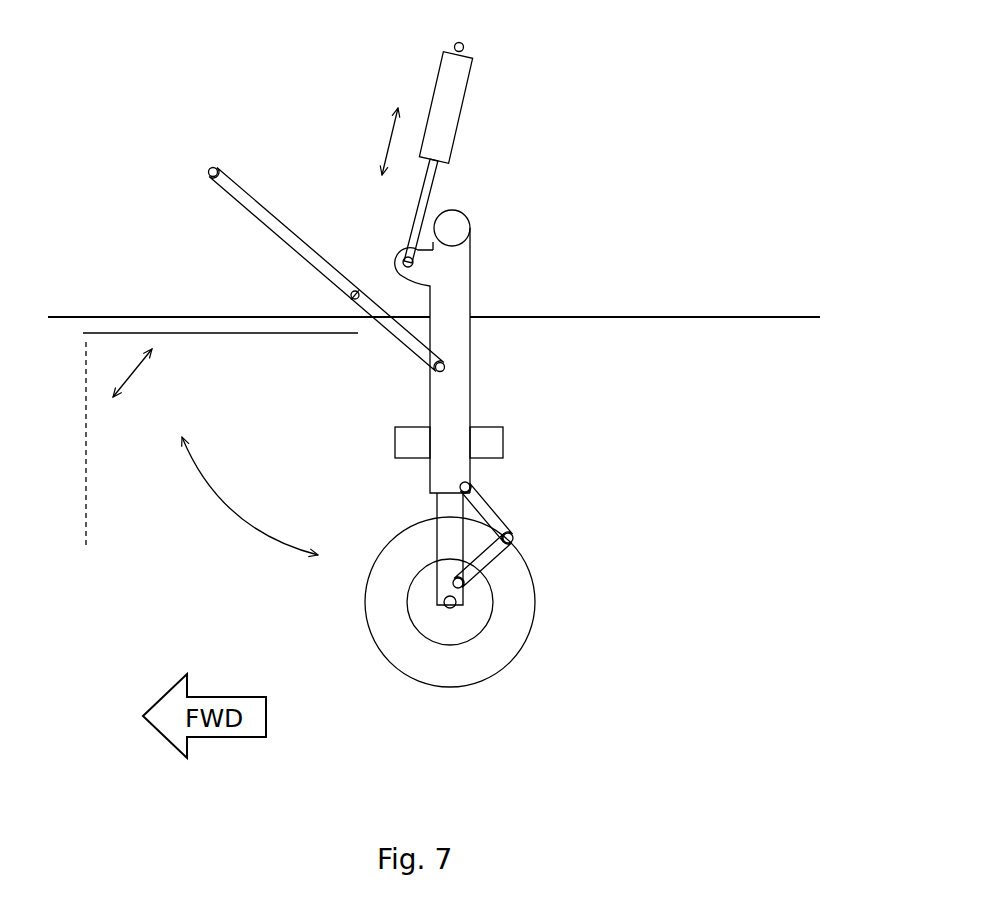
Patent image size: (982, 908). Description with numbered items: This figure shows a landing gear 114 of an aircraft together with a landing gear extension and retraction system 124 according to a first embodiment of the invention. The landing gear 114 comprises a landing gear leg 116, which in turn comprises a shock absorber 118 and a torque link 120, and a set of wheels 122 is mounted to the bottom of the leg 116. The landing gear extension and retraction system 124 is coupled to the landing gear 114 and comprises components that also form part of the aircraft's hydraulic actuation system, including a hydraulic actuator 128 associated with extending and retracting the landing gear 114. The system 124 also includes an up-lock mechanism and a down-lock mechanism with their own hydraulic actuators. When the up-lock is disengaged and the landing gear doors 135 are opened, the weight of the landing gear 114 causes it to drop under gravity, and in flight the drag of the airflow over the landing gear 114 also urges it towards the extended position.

The landing gear 114 is at (210, 565).
The landing gear leg 116 is at (483, 408).
The shock absorber 118 is at (430, 490).
The torque link 120 is at (517, 535).
The set of wheels 122 is at (507, 662).
The landing gear extension and retraction system 124 is at (558, 157).
The hydraulic actuator 128 is at (461, 111).
The landing gear doors 135 is at (287, 345).